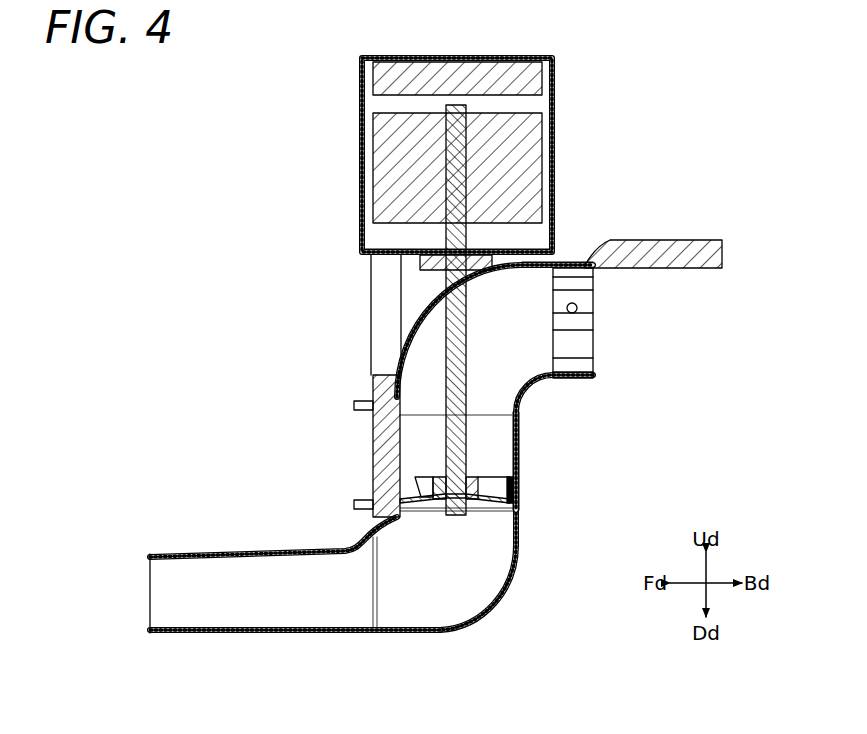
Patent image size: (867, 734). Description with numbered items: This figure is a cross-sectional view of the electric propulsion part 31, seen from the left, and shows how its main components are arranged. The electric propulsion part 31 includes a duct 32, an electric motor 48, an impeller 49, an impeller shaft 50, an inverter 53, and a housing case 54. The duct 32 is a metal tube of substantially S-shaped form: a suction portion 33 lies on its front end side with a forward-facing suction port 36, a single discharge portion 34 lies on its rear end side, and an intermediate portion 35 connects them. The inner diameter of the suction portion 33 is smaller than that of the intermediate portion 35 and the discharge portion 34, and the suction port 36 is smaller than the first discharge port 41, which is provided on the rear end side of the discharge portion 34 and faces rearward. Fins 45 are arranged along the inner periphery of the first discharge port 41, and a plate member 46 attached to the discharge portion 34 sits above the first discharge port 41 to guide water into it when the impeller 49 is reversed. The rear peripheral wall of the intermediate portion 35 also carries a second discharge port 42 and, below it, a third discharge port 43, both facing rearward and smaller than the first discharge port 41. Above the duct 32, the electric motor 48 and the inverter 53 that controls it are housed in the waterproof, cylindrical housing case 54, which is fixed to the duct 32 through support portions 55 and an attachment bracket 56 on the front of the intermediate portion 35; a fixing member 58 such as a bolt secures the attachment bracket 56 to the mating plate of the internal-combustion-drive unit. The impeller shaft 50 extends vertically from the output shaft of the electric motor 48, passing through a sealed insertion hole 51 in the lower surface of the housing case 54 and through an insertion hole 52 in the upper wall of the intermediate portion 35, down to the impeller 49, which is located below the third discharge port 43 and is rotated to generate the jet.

The electric propulsion part 31 is at (434, 508).
The duct 32 is at (505, 569).
The suction portion 33 is at (295, 557).
The discharge portion 34 is at (557, 228).
The intermediate portion 35 is at (496, 443).
The suction port 36 is at (118, 593).
The first discharge port 41 is at (611, 323).
The second discharge port 42 is at (544, 451).
The third discharge port 43 is at (545, 461).
The fin 45 is at (602, 330).
The plate member 46 is at (653, 227).
The electric motor 48 is at (491, 168).
The impeller 49 is at (488, 503).
The impeller shaft 50 is at (450, 331).
The insertion hole 51 is at (428, 236).
The insertion hole 52 is at (400, 271).
The inverter 53 is at (491, 78).
The housing case 54 is at (421, 155).
The support portion 55 is at (354, 315).
The attachment bracket 56 is at (353, 446).
The fixing member 58 is at (335, 455).